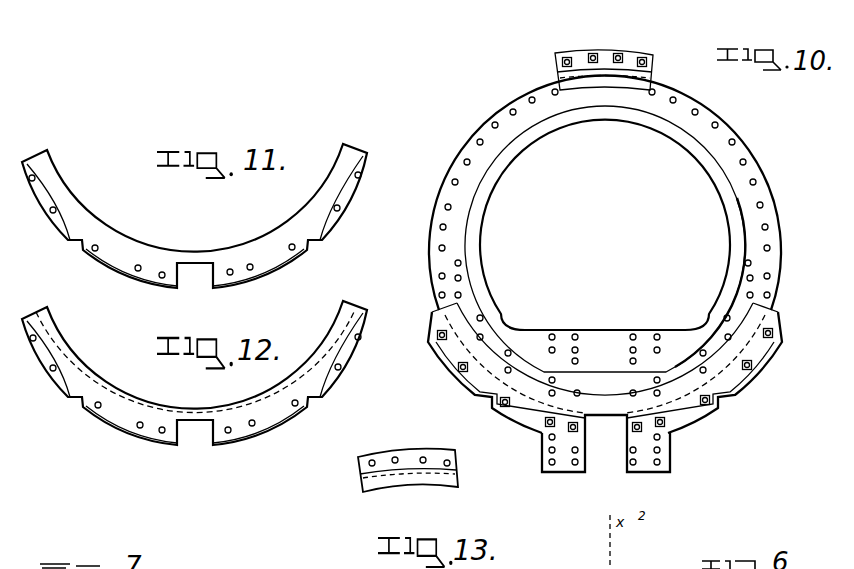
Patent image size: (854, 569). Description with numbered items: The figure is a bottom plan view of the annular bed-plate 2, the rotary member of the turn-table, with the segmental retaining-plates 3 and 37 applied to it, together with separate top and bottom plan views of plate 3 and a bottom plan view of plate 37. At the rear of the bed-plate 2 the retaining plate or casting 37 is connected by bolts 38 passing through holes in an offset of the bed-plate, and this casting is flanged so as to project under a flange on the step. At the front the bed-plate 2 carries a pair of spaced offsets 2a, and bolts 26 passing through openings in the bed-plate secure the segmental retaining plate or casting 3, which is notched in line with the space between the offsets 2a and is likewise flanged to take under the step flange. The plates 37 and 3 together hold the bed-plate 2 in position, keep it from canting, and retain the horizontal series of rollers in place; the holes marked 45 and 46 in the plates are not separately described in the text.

In FIG. 10, the bed-plate 2 is at (605, 236).
In FIG. 10, the spaced offsets 2a is at (633, 470).
In FIG. 10, the segmental retaining plate 3 is at (605, 368).
In FIG. 11, the segmental retaining plate 3 is at (194, 216).
In FIG. 12, the segmental retaining plate 3 is at (194, 373).
In FIG. 10, the bolts 26 is at (442, 340).
In FIG. 10, the retaining plate 37 is at (620, 77).
In FIG. 13, the retaining plate 37 is at (440, 475).
In FIG. 10, the bolts 38 is at (636, 50).
In FIG. 11, the bolt holes 45 is at (355, 208).
In FIG. 12, the bolt holes 45 is at (32, 383).
In FIG. 13, the pad bolt holes 46 is at (443, 459).